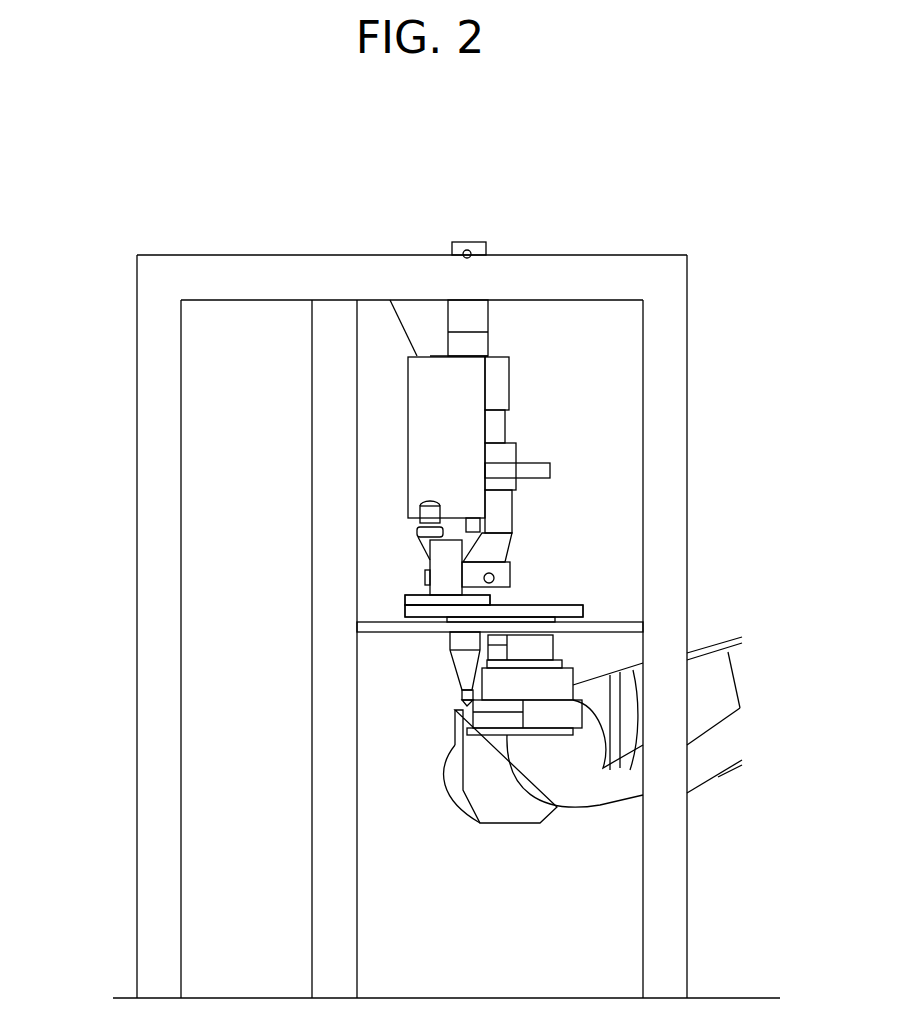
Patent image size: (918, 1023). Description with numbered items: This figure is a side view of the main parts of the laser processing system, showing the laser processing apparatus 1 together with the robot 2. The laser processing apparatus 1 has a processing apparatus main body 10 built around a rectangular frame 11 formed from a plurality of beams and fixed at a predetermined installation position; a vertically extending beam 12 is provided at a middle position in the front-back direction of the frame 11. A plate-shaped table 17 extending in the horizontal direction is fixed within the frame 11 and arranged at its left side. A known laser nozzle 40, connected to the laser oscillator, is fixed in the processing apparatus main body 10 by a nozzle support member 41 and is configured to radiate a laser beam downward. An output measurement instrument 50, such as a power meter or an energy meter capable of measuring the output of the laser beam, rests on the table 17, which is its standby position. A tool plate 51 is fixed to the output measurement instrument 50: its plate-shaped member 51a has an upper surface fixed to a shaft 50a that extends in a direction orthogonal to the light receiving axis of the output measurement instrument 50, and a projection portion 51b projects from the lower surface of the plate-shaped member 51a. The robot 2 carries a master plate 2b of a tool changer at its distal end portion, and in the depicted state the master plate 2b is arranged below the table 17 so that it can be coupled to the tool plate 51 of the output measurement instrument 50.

The laser processing apparatus 1 is at (186, 212).
The robot 2 is at (729, 790).
The master plate 2b is at (562, 660).
The processing apparatus main body 10 is at (137, 357).
The frame 11 is at (687, 338).
The beam 12 is at (312, 732).
The table 17 is at (400, 634).
The laser nozzle 40 is at (516, 452).
The nozzle support member 41 is at (400, 300).
The output measurement instrument 50 is at (408, 420).
The shaft 50a is at (430, 563).
The tool plate 51 is at (405, 608).
The plate-shaped member 51a is at (585, 606).
The projection portion 51b is at (565, 606).